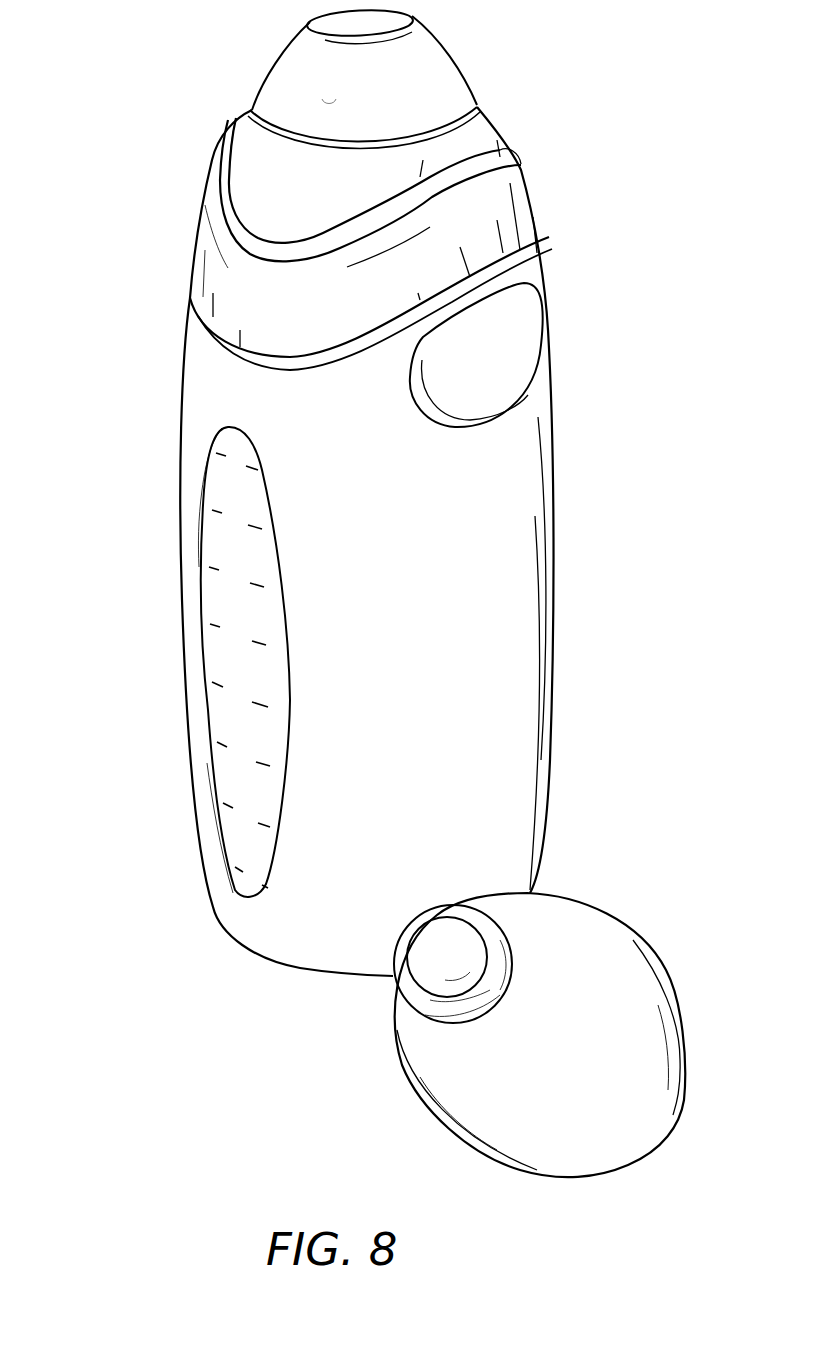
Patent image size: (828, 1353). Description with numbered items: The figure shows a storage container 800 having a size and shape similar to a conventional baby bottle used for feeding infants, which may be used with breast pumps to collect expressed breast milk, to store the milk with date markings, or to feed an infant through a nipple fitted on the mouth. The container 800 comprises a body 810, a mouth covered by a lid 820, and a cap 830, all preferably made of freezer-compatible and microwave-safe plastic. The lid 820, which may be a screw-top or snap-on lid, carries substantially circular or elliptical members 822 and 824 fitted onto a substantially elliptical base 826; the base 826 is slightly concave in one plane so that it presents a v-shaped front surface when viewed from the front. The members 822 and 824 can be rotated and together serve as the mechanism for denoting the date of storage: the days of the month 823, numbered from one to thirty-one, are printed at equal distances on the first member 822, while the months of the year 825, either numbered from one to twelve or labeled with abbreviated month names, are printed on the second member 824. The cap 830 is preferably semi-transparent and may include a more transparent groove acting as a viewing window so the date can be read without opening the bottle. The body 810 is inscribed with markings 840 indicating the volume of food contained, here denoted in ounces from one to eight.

The storage container 800 is at (203, 1031).
The body 810 is at (508, 640).
The lid 820 is at (480, 106).
The first member 822 is at (370, 185).
The days of the month 823 is at (232, 180).
The second member 824 is at (400, 22).
The months of the year 825 is at (328, 96).
The substantially elliptical base 826 is at (193, 300).
The cap 830 is at (588, 945).
The markings 840 is at (215, 520).